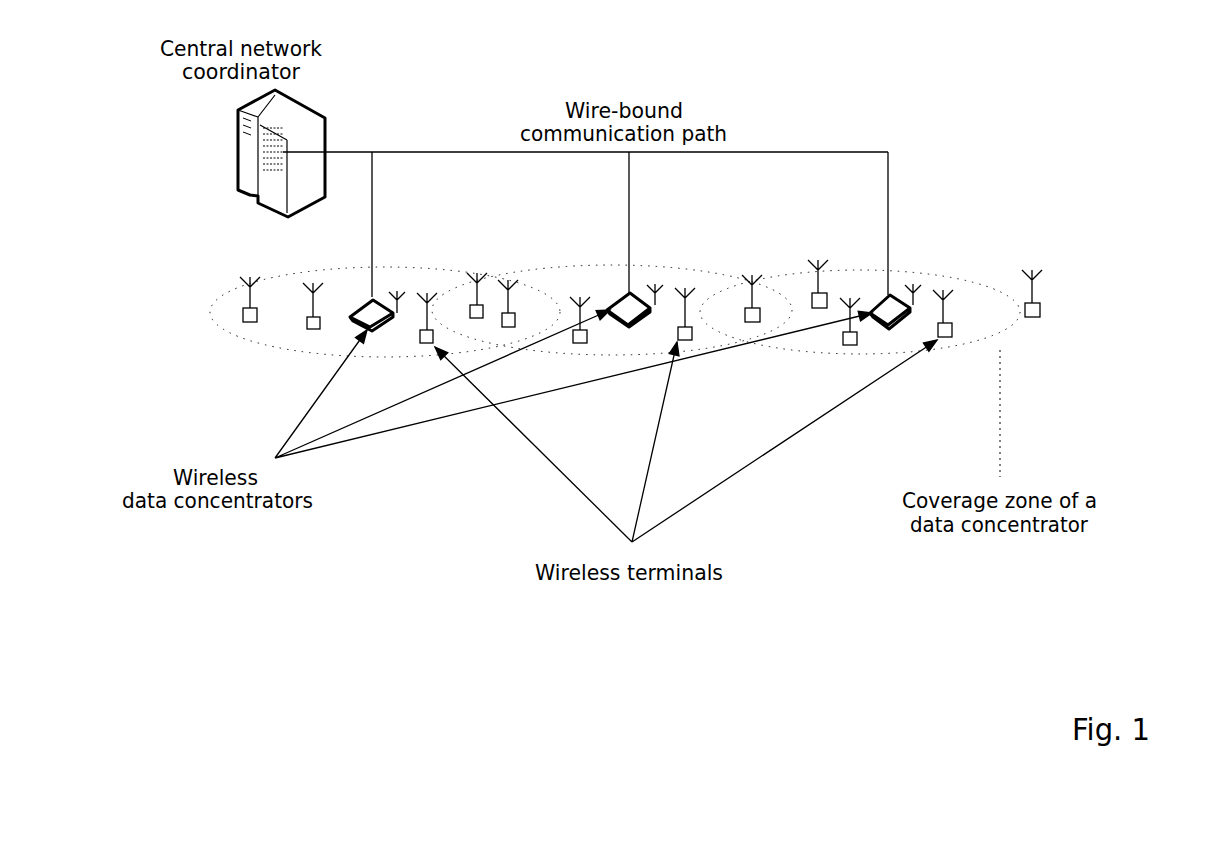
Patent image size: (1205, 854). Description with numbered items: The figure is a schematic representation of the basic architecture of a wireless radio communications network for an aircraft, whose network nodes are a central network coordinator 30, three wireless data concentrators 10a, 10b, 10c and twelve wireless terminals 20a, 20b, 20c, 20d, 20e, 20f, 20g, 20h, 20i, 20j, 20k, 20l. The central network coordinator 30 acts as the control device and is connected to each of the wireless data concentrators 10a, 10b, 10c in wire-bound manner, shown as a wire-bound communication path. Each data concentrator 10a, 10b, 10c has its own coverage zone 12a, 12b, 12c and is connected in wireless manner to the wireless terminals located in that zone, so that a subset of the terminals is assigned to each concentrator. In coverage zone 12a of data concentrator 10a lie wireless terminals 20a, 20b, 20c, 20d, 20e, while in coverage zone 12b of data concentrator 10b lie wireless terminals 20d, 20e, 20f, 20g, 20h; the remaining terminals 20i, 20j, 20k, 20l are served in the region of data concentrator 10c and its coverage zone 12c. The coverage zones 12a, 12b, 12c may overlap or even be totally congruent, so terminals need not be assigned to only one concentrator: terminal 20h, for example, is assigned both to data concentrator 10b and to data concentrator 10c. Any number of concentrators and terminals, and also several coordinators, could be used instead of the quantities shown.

The central network coordinator 30 is at (230, 147).
The wireless data concentrator 10a is at (380, 337).
The wireless data concentrator 10b is at (613, 297).
The wireless data concentrator 10c is at (890, 327).
The coverage zone 12a is at (232, 340).
The coverage zone 12b is at (593, 355).
The coverage zone 12c is at (1025, 342).
The wireless terminal 20a is at (237, 297).
The wireless terminal 20b is at (300, 303).
The wireless terminal 20c is at (417, 293).
The wireless terminal 20d is at (465, 270).
The wireless terminal 20e is at (503, 275).
The wireless terminal 20f is at (570, 293).
The wireless terminal 20g is at (677, 280).
The wireless terminal 20h is at (745, 272).
The wireless terminal 20i is at (803, 253).
The wireless terminal 20j is at (847, 290).
The wireless terminal 20k is at (948, 343).
The wireless terminal 20l is at (1028, 263).